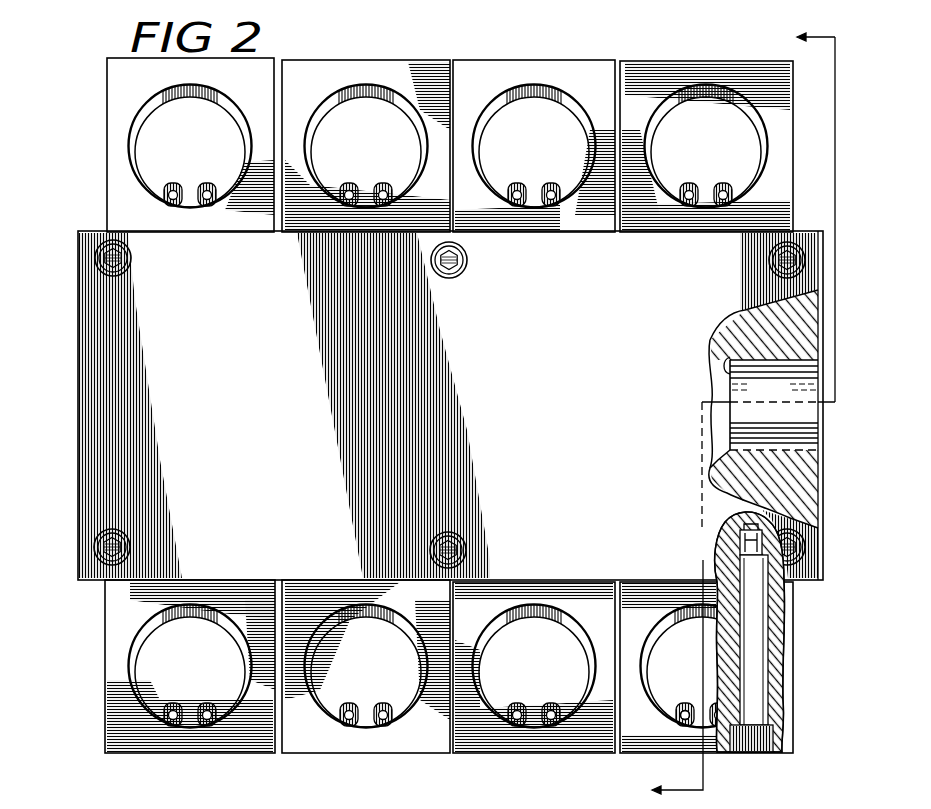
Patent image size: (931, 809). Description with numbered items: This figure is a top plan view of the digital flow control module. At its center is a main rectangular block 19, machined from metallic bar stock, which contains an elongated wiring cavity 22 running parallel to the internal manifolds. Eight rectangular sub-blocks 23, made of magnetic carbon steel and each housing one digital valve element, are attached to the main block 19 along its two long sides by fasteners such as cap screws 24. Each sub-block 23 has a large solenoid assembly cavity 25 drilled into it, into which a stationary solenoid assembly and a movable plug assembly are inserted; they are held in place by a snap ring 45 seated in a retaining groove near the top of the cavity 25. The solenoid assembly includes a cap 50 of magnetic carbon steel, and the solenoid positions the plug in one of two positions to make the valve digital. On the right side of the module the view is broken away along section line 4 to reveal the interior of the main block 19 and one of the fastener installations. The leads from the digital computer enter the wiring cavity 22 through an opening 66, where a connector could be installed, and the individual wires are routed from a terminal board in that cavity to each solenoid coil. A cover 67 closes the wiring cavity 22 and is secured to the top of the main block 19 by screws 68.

The section line 4- 4 is at (732, 419).
The main rectangular block 19 is at (823, 328).
The wiring cavity 22 is at (768, 445).
The rectangular sub-blocks 23 is at (299, 60).
The cap screws 24 is at (746, 753).
The solenoid assembly cavity 25 is at (688, 730).
The snap ring 45 is at (664, 628).
The cap 50 is at (695, 655).
The opening 66 is at (812, 436).
The cover 67 is at (80, 568).
The screws 68 is at (97, 264).